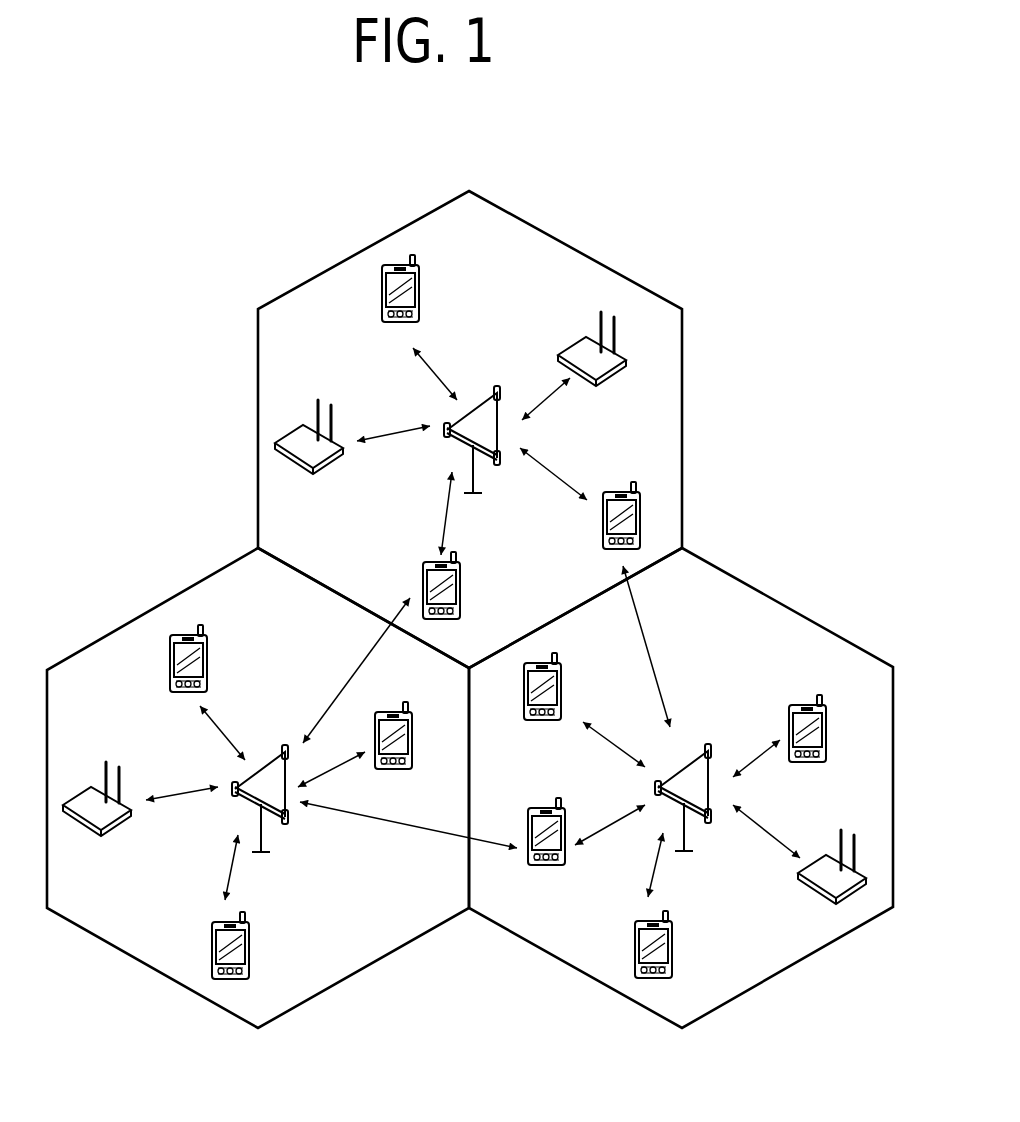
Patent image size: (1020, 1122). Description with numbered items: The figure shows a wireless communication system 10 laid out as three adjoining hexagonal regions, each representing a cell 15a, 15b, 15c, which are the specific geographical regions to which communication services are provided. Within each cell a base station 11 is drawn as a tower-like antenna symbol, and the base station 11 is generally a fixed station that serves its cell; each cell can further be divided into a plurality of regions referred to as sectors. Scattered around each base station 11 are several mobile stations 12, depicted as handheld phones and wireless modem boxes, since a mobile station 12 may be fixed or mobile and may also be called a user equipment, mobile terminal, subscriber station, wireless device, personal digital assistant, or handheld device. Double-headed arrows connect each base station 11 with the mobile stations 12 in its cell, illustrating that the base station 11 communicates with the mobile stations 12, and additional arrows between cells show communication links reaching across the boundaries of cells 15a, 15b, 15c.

The wireless communication system 10 is at (778, 313).
The base station 11 is at (485, 400).
The mobile station 12 is at (419, 300).
The cell 15a is at (683, 410).
The cell 15b is at (812, 620).
The cell 15c is at (125, 623).